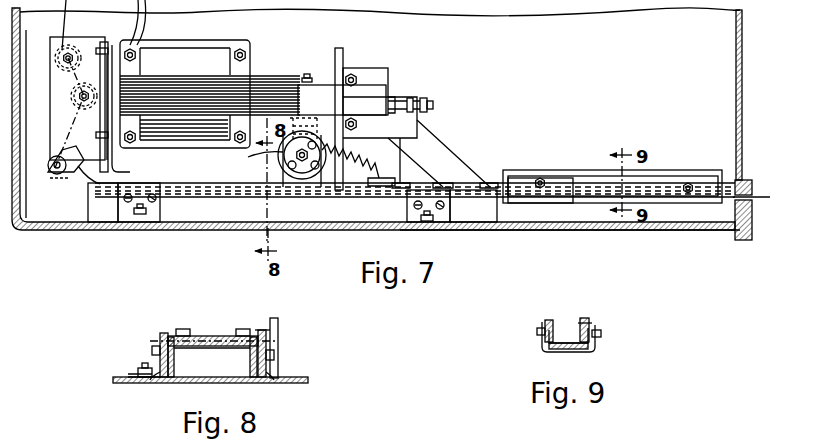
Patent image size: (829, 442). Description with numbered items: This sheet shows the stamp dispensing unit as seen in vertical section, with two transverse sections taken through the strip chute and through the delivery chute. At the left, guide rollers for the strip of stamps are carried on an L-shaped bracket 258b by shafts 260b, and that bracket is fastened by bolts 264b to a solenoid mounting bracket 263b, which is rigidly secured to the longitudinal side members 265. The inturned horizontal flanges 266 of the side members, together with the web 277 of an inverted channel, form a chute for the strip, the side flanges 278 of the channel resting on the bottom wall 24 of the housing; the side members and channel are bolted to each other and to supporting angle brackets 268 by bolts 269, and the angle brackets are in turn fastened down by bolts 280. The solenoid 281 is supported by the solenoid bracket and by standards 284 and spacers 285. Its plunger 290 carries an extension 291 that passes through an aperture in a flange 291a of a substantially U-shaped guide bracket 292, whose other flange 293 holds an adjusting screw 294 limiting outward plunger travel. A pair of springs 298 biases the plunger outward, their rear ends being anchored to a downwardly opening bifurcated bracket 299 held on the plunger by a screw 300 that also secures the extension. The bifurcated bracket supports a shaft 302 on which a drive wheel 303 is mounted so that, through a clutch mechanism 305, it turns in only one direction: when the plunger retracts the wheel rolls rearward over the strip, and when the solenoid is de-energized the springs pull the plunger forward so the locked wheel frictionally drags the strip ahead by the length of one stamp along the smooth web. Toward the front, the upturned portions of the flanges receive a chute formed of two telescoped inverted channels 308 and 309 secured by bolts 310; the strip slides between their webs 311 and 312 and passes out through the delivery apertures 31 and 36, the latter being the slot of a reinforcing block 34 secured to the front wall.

In FIG. 7, the L-shaped bracket 258b is at (57, 26).
In FIG. 7, the bolts 264b is at (146, 91).
In FIG. 7, the solenoid mounting bracket 263b is at (113, 156).
In FIG. 7, the shafts 260b is at (53, 160).
In FIG. 7, the solenoid 281 is at (186, 48).
In FIG. 7, the plunger 290 is at (300, 85).
In FIG. 7, the screw 300 is at (302, 76).
In FIG. 7, the extension 291 is at (323, 92).
In FIG. 7, the flange 291a is at (338, 53).
In FIG. 7, the U-shaped guide bracket 292 is at (389, 67).
In FIG. 7, the flange 293 is at (419, 100).
In FIG. 7, the adjusting screw 294 is at (434, 102).
In FIG. 7, the springs 298 is at (350, 174).
In FIG. 7, the bifurcated bracket 299 is at (294, 172).
In FIG. 7, the shaft 302 is at (308, 160).
In FIG. 7, the drive wheel 303 is at (270, 181).
In FIG. 7, the clutch mechanism 305 is at (562, 160).
In FIG. 7, the bottom wall 24 is at (488, 231).
In FIG. 8, the bottom wall 24 is at (310, 380).
In FIG. 7, the transverse slot 31 is at (746, 182).
In FIG. 7, the transverse slot 36 is at (752, 197).
In FIG. 7, the reinforcing block 34 is at (753, 226).
In FIG. 8, the longitudinal side members 265 is at (163, 340).
In FIG. 8, the inturned horizontal flanges 266 is at (240, 332).
In FIG. 8, the bolts 269 is at (158, 350).
In FIG. 8, the web 277 is at (215, 347).
In FIG. 8, the side flanges 278 is at (176, 382).
In FIG. 8, the bolts 280 is at (146, 368).
In FIG. 8, the supporting angle brackets 268 is at (132, 377).
In FIG. 8, the standards 284 is at (276, 320).
In FIG. 8, the spacers 285 is at (264, 332).
In FIG. 9, the inverted channel 308 is at (589, 318).
In FIG. 9, the inverted channel 309 is at (592, 328).
In FIG. 9, the bolts 310 is at (602, 333).
In FIG. 9, the web 311 is at (573, 338).
In FIG. 9, the web 312 is at (572, 352).